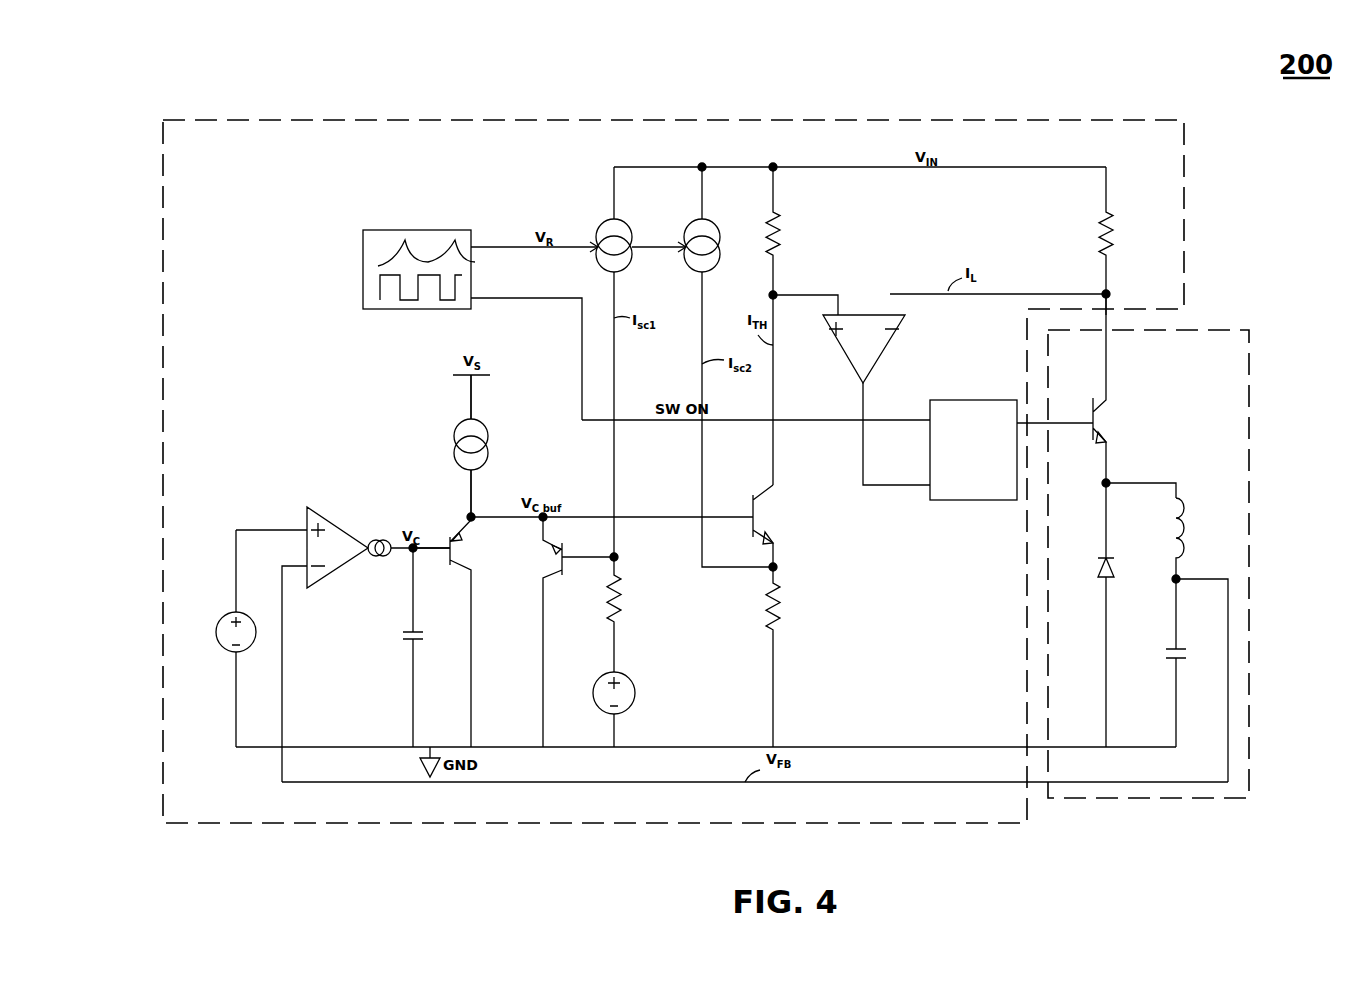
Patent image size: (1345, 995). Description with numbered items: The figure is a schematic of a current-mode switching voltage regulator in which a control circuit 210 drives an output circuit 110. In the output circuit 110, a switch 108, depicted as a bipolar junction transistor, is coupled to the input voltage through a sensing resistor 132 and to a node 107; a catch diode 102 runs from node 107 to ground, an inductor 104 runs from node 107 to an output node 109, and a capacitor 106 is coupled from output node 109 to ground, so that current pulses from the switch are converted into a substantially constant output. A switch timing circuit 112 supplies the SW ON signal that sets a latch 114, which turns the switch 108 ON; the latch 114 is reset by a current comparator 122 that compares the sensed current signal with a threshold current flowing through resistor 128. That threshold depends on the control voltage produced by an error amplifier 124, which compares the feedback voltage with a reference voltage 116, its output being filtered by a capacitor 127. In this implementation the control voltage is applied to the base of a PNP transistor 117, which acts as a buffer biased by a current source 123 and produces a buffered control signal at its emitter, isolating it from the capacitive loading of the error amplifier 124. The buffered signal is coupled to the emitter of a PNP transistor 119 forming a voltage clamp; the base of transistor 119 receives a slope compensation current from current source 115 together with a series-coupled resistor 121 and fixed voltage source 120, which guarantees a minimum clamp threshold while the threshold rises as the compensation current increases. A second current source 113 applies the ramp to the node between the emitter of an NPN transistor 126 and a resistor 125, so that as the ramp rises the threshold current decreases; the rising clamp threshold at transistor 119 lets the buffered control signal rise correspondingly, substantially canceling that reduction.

The control circuit 210 is at (162, 262).
The output circuit 110 is at (1250, 366).
The switch timing circuit 112 is at (400, 230).
The current source 115 is at (606, 224).
The variable current source 113 is at (692, 224).
The resistor 128 is at (766, 222).
The sensing resistor 132 is at (1096, 230).
The current comparator 122 is at (845, 314).
The latch 114 is at (978, 400).
The switch 108 is at (1092, 412).
The node 107 is at (1110, 481).
The inductor 104 is at (1168, 531).
The output node 109 is at (1180, 577).
The catch diode 102 is at (1097, 578).
The capacitor 106 is at (1172, 661).
The current source 123 is at (456, 441).
The PNP transistor 117 is at (452, 534).
The error amplifier 124 is at (337, 518).
The reference voltage 116 is at (220, 621).
The capacitor 127 is at (406, 645).
The PNP transistor 119 is at (566, 551).
The resistor 121 is at (622, 578).
The fixed voltage source 120 is at (604, 681).
The NPN transistor 126 is at (750, 513).
The resistor 125 is at (786, 596).